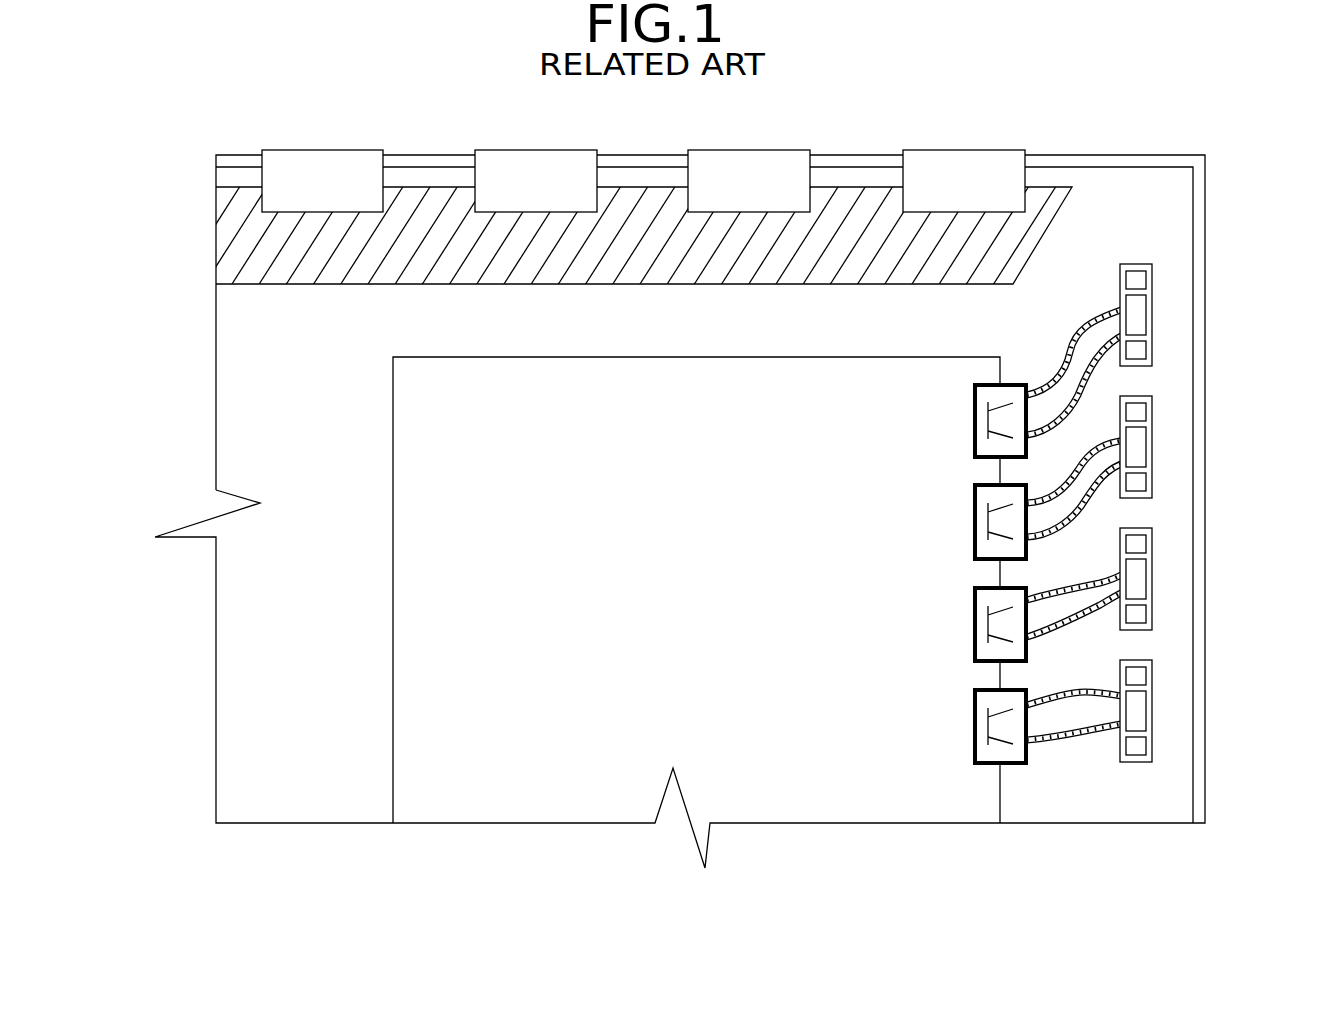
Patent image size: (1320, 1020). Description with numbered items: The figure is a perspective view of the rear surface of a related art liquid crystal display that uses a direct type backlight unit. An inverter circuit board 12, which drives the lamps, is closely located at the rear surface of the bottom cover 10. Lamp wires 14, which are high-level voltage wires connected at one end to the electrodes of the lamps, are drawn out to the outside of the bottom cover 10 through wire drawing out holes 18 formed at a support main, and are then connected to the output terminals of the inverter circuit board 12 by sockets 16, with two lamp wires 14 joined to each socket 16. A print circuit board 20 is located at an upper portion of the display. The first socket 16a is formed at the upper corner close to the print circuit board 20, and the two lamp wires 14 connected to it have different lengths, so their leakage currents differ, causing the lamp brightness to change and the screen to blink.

The bottom cover 10 is at (310, 389).
The inverter circuit board 12 is at (688, 448).
The lamp wires 14 is at (1047, 740).
The sockets 16 is at (965, 723).
The first socket 16a is at (972, 427).
The wire drawing out holes 18 is at (1140, 313).
The print circuit board 20 is at (416, 142).